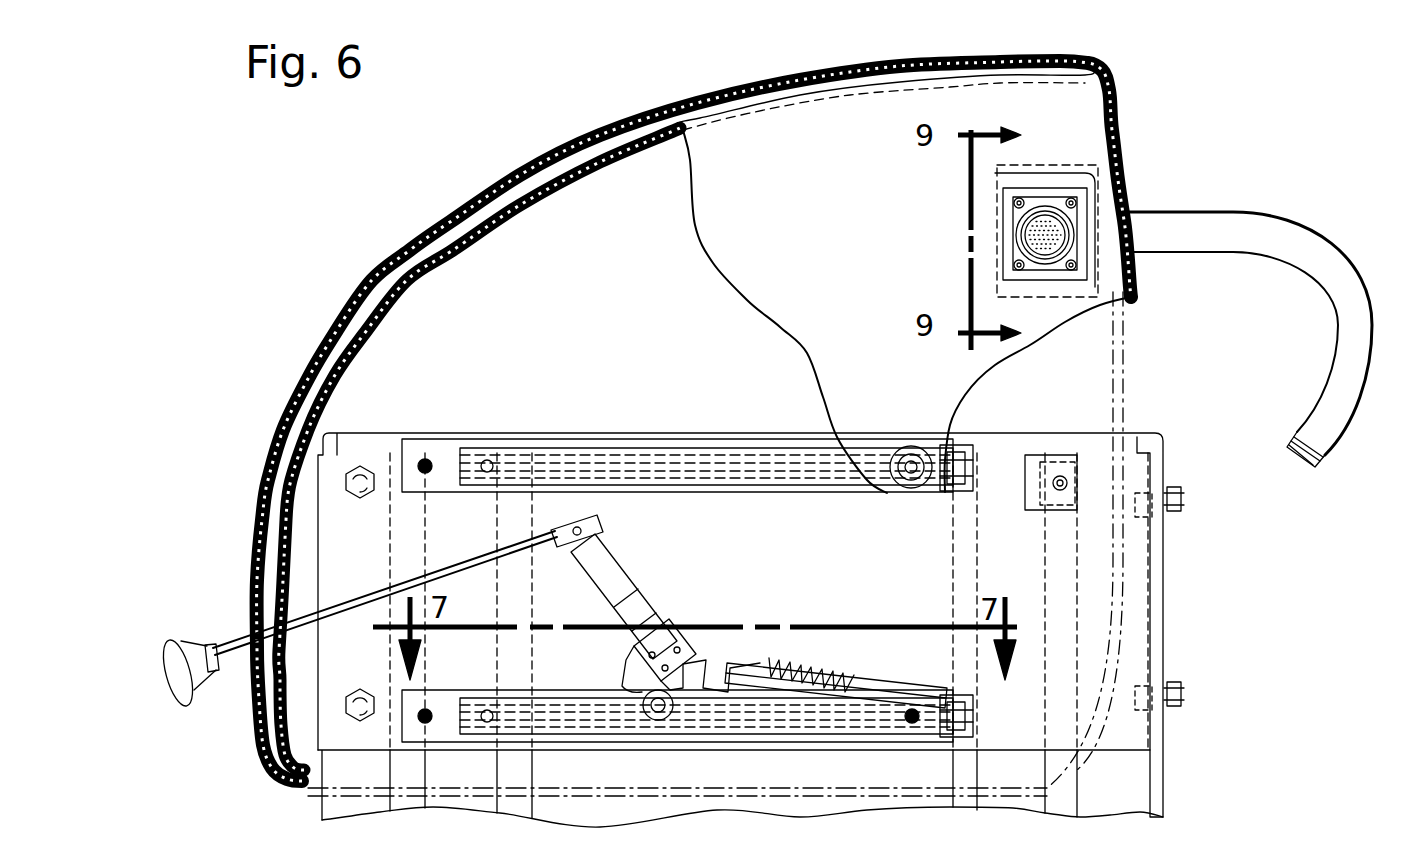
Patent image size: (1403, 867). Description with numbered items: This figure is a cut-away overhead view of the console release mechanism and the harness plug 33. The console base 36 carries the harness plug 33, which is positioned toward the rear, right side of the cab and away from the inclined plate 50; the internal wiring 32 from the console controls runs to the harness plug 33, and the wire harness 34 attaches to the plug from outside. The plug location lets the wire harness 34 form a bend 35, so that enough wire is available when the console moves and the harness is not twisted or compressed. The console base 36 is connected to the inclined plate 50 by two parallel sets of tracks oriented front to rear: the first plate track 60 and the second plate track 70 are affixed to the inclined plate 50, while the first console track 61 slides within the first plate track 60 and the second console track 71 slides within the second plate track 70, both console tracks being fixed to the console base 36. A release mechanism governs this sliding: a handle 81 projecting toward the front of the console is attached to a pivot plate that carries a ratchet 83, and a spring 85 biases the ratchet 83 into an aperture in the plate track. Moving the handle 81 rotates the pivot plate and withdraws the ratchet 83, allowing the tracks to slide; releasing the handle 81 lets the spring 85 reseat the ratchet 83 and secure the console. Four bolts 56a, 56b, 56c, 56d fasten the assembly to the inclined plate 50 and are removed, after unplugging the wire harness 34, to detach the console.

The internal wiring 32 is at (1043, 207).
The harness plug 33 is at (1250, 295).
The wire harness 34 is at (1164, 258).
The bend 35 is at (1310, 322).
The console base 36 is at (795, 187).
The inclined plate 50 is at (810, 563).
The bolt 56a is at (345, 705).
The bolt 56b is at (345, 482).
The bolt 56c is at (1185, 693).
The bolt 56d is at (1185, 508).
The first plate track 60 is at (962, 460).
The first console track 61 is at (447, 440).
The second plate track 70 is at (975, 705).
The second console track 71 is at (445, 690).
The handle 81 is at (180, 666).
The ratchet 83 is at (703, 692).
The spring 85 is at (810, 680).